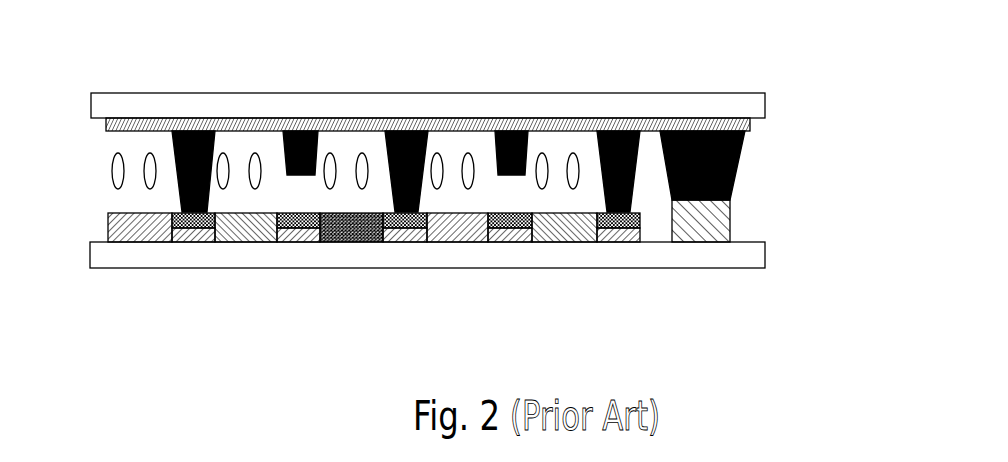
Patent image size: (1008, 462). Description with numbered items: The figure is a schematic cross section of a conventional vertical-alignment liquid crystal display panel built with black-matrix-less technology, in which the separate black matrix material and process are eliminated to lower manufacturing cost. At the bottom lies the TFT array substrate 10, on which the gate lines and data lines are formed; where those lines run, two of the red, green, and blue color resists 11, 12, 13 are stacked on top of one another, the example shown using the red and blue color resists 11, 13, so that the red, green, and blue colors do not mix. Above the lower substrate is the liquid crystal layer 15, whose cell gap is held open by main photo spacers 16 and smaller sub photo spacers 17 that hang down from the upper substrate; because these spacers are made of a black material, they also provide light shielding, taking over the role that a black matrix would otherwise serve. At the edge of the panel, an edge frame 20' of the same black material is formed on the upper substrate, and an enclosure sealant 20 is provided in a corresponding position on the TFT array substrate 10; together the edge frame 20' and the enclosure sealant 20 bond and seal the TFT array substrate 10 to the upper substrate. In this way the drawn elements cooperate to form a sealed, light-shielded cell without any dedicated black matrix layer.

The TFT array substrate 10 is at (765, 252).
The red color resist 11 is at (145, 228).
The green color resist 12 is at (250, 228).
The blue color resist 13 is at (350, 228).
The liquid crystal layer 15 is at (110, 168).
The main photo spacer 16 is at (192, 131).
The sub photo spacer 17 is at (298, 131).
The enclosure sealant 20 is at (726, 263).
The edge frame 20' is at (764, 169).